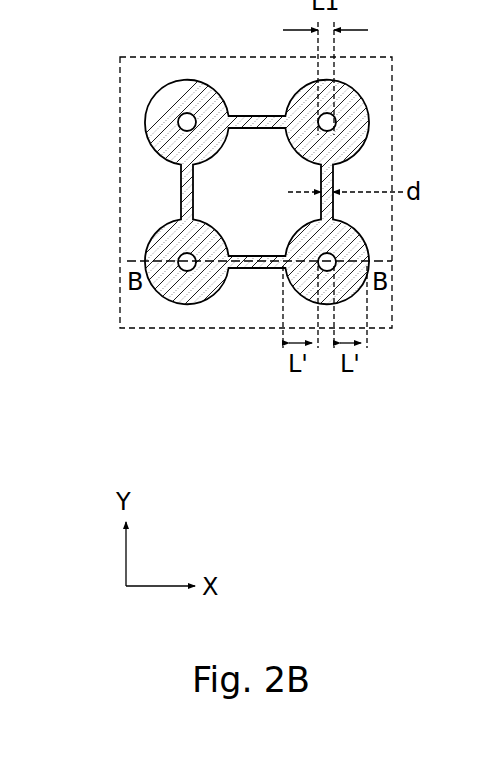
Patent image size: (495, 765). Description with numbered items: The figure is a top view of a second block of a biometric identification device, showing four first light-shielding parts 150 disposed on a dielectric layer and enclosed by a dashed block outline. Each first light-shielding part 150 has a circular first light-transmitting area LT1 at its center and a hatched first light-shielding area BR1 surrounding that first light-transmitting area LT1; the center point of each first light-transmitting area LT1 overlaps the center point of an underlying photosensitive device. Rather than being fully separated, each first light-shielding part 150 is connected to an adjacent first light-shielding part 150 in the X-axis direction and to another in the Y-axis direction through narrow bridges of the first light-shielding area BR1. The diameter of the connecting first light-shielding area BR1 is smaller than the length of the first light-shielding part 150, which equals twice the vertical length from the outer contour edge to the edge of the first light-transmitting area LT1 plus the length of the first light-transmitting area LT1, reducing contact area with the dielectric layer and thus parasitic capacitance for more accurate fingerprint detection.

The first light-transmitting area LT1 is at (187, 271).
The first light-shielding area BR1 is at (210, 283).
The first light-shielding part 150 is at (330, 430).